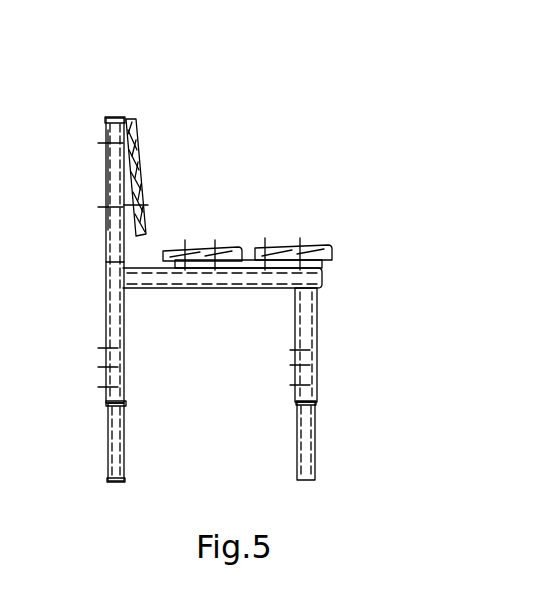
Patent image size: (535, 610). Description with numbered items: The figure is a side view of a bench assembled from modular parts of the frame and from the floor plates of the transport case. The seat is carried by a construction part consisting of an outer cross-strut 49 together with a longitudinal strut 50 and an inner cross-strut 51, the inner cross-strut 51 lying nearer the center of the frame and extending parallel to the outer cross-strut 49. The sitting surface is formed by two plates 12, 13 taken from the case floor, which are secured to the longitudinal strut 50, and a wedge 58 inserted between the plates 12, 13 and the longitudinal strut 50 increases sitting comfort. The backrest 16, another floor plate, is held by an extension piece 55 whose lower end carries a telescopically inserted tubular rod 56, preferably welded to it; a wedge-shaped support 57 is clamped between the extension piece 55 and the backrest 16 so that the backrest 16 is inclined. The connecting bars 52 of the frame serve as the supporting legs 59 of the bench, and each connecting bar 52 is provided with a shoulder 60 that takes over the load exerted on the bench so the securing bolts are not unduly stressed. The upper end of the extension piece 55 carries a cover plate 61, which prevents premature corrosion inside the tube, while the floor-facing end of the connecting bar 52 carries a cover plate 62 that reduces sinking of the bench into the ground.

The plate 12 is at (216, 247).
The plate 13 is at (300, 247).
The backrest 16 is at (137, 128).
The outer cross-strut 49 is at (105, 318).
The longitudinal strut 50 is at (322, 280).
The inner cross-strut 51 is at (305, 315).
The connecting bar 52 is at (312, 438).
The extension piece 55 is at (112, 192).
The tubular rod 56 is at (104, 262).
The wedge-shaped support 57 is at (130, 196).
The wedge 58 is at (305, 263).
The supporting leg 59 is at (351, 414).
The shoulder 60 is at (108, 404).
The cover plate 61 is at (116, 117).
The cover plate 62 is at (110, 482).